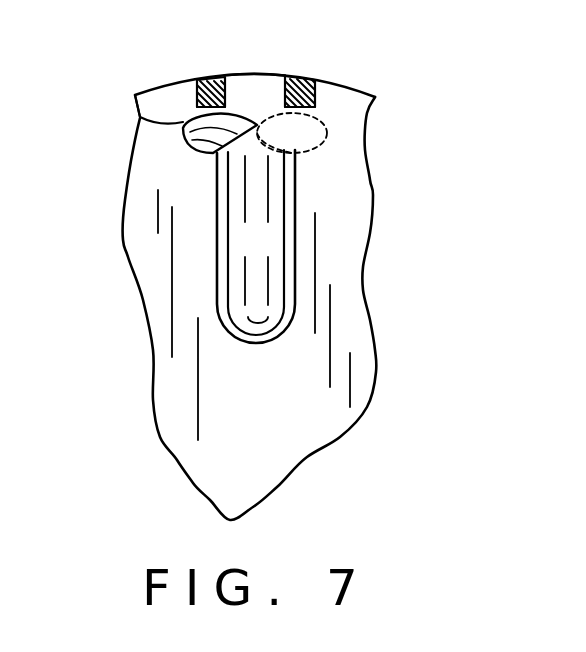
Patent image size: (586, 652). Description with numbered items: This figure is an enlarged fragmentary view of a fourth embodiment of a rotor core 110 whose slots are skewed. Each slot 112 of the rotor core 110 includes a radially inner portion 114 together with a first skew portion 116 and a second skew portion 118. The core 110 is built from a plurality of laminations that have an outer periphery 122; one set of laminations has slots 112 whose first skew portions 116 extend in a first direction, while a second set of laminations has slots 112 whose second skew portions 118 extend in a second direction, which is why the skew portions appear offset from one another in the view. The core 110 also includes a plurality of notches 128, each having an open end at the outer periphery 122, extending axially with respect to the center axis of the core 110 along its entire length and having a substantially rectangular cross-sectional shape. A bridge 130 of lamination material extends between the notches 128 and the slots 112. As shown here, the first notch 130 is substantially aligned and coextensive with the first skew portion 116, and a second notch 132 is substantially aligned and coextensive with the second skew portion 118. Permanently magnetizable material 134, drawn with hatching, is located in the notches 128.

The rotor core 110 is at (345, 250).
The slot 112 is at (208, 283).
The radially inner portion 114 is at (275, 247).
The first skew portion 116 is at (183, 133).
The second skew portion 118 is at (310, 153).
The outer periphery 122 is at (370, 90).
The notch 128 is at (190, 104).
The bridge 130 is at (138, 114).
The second notch 132 is at (275, 78).
The permanently magnetizable material 134 is at (204, 80).